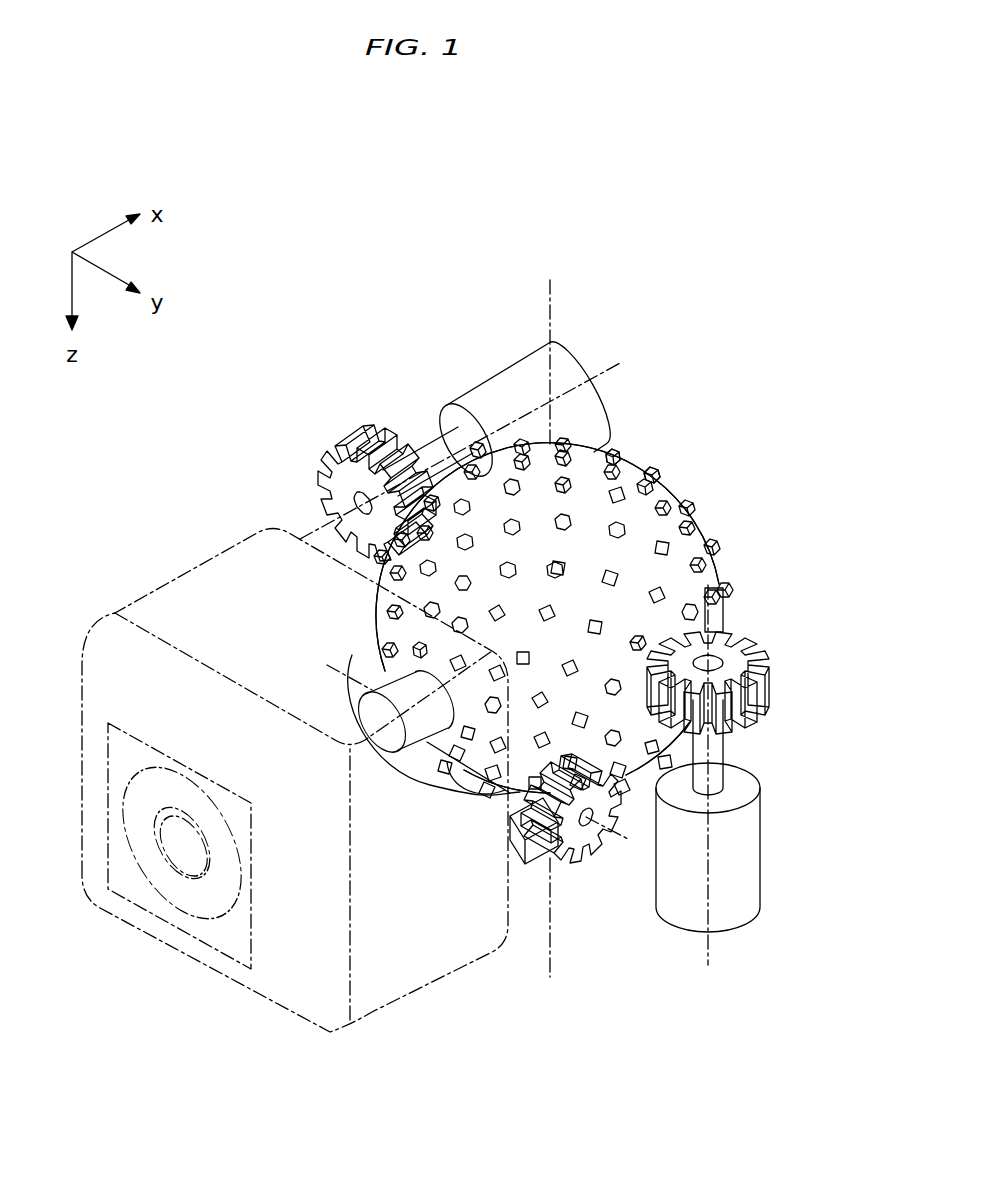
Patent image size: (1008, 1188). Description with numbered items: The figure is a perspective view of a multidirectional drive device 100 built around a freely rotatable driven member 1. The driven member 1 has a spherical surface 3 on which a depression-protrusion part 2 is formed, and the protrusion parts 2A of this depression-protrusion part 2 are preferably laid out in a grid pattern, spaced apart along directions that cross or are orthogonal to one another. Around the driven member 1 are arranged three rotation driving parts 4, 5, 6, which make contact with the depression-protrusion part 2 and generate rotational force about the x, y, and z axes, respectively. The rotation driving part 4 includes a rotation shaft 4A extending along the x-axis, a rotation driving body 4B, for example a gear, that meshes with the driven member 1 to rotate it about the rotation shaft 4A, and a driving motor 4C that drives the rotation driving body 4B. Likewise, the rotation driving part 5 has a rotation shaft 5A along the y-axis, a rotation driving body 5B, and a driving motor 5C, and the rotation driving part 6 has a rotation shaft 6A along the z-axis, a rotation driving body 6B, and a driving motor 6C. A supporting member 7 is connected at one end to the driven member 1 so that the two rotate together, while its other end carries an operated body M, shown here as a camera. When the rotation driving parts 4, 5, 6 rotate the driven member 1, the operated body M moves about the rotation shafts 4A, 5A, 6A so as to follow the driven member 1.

The multidirectional drive device 100 is at (630, 210).
The driven member 1 is at (722, 575).
The depression-protrusion part 2 is at (770, 400).
The protrusion parts 2A is at (622, 446).
The spherical surface 3 is at (727, 613).
The rotation driving part 4 is at (474, 389).
The rotation shaft 4A is at (427, 458).
The rotation driving body 4B is at (360, 440).
The driving motor 4C is at (573, 356).
The rotation driving part 5 is at (470, 812).
The rotation shaft 5A is at (600, 852).
The rotation driving body 5B is at (563, 873).
The driving motor 5C is at (428, 752).
The rotation driving part 6 is at (751, 785).
The rotation shaft 6A is at (722, 747).
The rotation driving body 6B is at (772, 660).
The driving motor 6C is at (745, 838).
The supporting member 7 is at (382, 752).
The operated body M is at (192, 563).